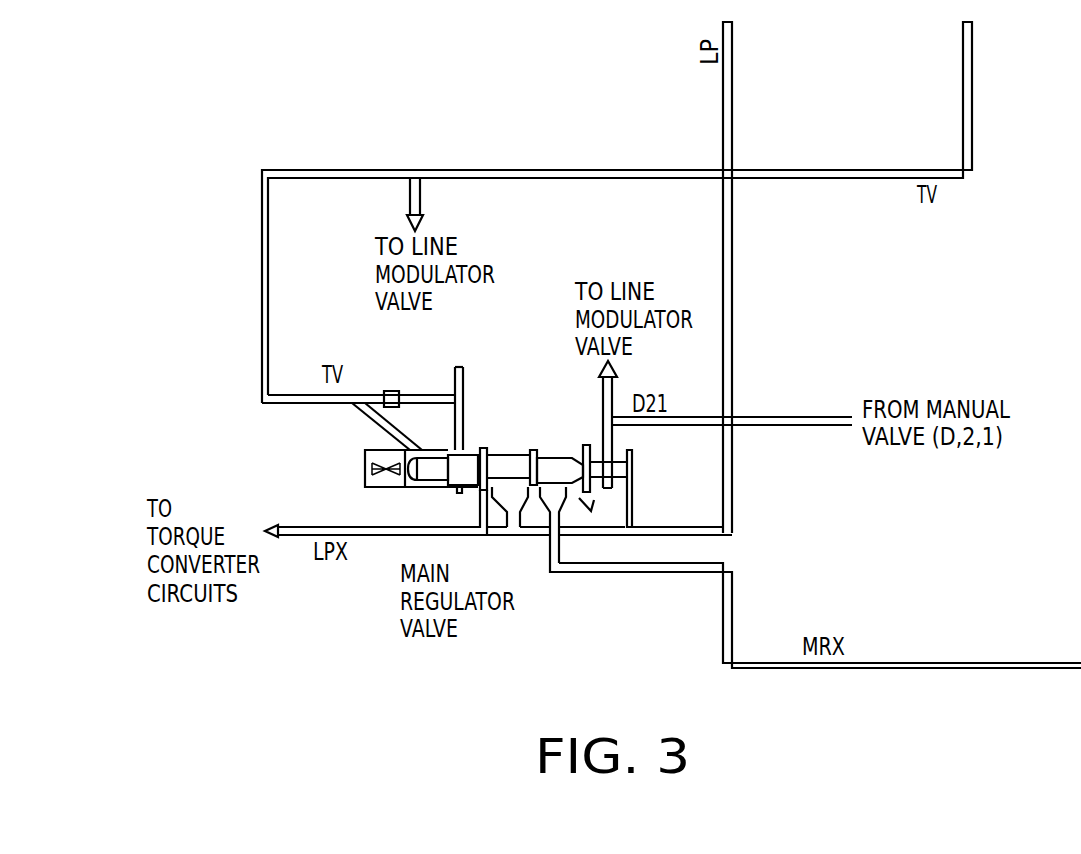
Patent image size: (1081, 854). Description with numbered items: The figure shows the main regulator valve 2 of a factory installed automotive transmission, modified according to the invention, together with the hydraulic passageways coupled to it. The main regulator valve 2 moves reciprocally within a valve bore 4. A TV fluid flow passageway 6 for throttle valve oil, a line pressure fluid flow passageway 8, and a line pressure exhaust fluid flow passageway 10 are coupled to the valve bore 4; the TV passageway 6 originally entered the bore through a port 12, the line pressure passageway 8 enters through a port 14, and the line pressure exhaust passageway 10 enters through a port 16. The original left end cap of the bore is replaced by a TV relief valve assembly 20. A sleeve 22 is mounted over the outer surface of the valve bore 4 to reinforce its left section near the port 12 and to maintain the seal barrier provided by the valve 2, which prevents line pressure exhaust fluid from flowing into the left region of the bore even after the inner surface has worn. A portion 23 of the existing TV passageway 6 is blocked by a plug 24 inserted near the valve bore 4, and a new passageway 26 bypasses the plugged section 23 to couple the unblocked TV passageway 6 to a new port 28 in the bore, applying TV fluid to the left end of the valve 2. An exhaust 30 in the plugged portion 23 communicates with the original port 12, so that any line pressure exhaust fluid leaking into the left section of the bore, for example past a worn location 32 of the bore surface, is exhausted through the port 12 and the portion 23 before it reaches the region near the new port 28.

The main regulator valve 2 is at (557, 458).
The valve bore 4 is at (500, 442).
The TV fluid flow passageway 6 is at (270, 294).
The LP fluid flow passageway 8 is at (533, 535).
The LPX fluid flow passageway 10 is at (390, 536).
The port 12 is at (450, 448).
The port 14 is at (507, 513).
The port 16 is at (461, 493).
The TV relief valve assembly 20 is at (362, 478).
The sleeve 22 is at (423, 492).
The plugged portion of TV passageway 23 is at (428, 397).
The plug 24 is at (378, 391).
The new passageway 26 is at (373, 427).
The new port 28 is at (421, 448).
The exhaust 30 is at (467, 367).
The worn location of bore inner surface 32 is at (472, 443).